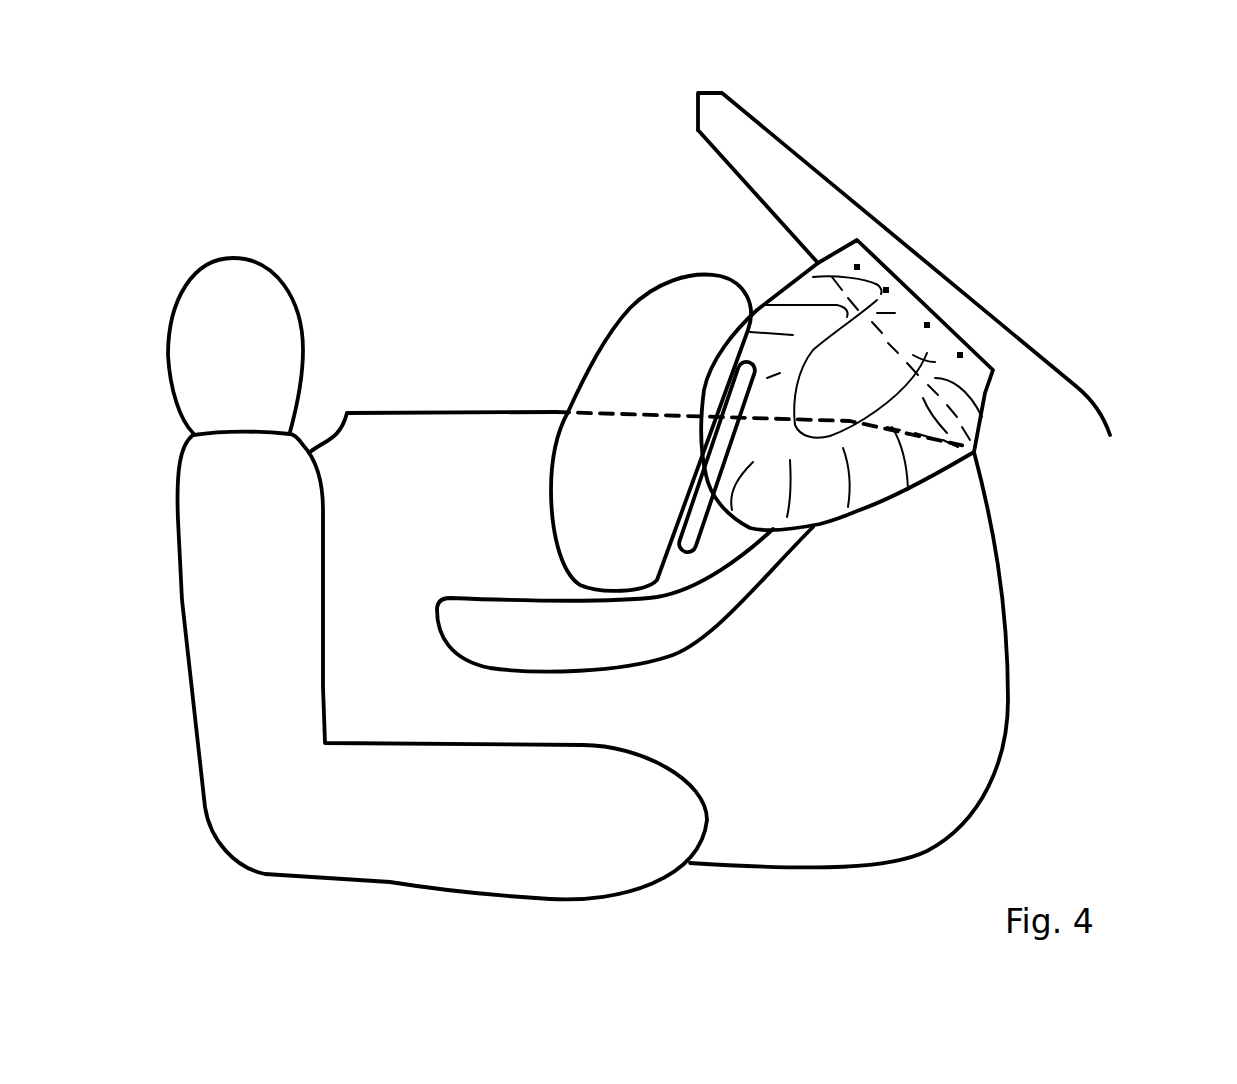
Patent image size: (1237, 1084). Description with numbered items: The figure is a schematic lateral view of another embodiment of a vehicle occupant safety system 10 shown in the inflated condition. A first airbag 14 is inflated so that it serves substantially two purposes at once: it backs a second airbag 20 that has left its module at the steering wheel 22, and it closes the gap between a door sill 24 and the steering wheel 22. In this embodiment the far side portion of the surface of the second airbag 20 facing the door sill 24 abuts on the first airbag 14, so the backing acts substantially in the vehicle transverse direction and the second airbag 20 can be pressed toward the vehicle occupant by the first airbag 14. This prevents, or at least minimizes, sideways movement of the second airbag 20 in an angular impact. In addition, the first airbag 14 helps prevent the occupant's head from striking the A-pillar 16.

The vehicle occupant safety system 10 is at (1062, 527).
The first airbag 14 is at (868, 365).
The A-pillar 16 is at (775, 168).
The second airbag 20 is at (650, 355).
The steering wheel 22 is at (692, 527).
The door sill 24 is at (438, 457).